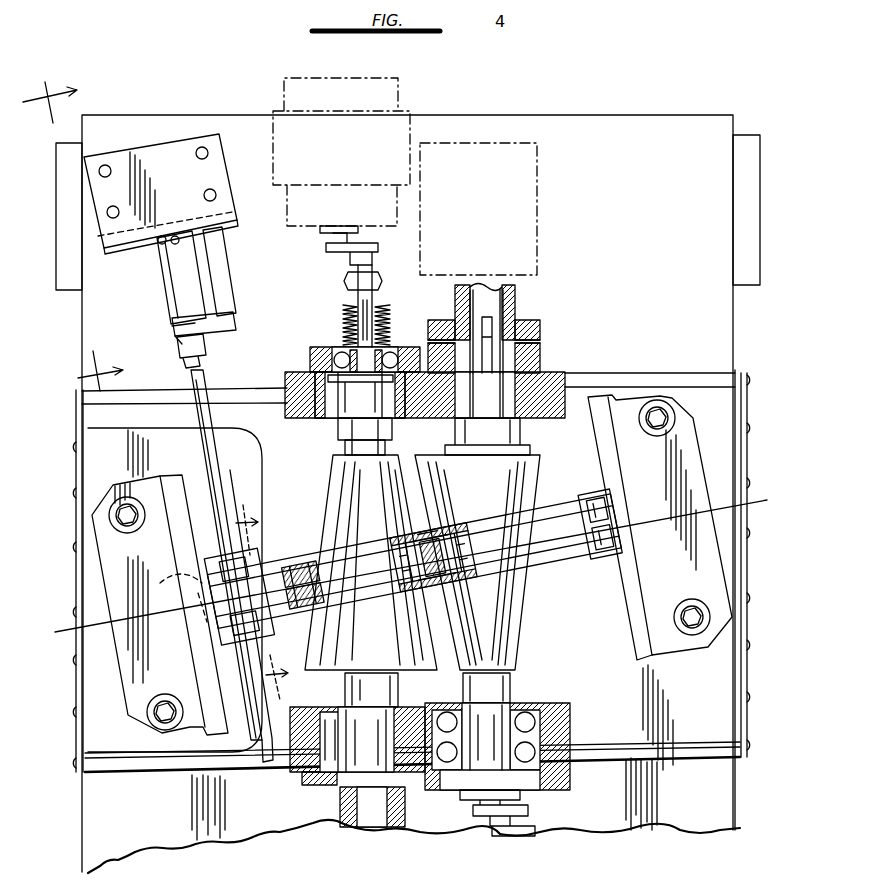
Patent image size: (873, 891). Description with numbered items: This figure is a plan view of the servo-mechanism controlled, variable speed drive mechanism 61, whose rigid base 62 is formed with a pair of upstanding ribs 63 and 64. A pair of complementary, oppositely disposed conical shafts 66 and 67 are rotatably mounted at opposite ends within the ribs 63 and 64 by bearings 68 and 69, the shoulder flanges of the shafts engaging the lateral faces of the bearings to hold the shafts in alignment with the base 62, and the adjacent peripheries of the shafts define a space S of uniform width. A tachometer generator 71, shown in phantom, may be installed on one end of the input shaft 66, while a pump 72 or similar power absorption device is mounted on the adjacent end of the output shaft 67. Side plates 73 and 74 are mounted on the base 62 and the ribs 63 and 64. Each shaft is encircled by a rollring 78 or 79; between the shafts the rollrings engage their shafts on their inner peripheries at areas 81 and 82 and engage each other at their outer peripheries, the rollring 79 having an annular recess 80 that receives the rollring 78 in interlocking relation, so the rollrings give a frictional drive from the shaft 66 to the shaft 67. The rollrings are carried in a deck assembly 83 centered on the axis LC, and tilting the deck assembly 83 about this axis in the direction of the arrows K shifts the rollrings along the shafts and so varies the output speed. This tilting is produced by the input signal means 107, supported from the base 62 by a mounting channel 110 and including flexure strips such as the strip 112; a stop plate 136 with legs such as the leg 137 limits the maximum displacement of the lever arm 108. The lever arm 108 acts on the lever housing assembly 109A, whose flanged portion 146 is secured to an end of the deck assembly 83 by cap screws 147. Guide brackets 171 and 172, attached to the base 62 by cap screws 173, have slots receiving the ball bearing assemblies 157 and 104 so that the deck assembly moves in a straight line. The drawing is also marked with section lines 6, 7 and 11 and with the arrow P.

The servo-mechanism controlled variable speed drive mechanism 61 is at (673, 68).
The rigid base 62 is at (719, 121).
The upstanding rib 63 is at (568, 378).
The upstanding rib 64 is at (568, 777).
The conical shaft 66 is at (347, 452).
The conical shaft 67 is at (433, 458).
The bearing 68 is at (347, 425).
The bearing 69 is at (525, 710).
The tachometer generator 71 is at (298, 80).
The pump 72 is at (540, 166).
The side plate 73 is at (83, 430).
The side plate 74 is at (743, 460).
The rollring 78 is at (412, 588).
The rollring 79 is at (436, 540).
The annular recess 80 is at (450, 568).
The engagement area 81 is at (412, 577).
The engagement area 82 is at (445, 556).
The deck assembly member 83 is at (492, 513).
The ball bearing 104 is at (622, 545).
The means for applying an input signal 107 is at (146, 314).
The lever arm 108 is at (207, 455).
The lever housing assembly 109A is at (216, 633).
The mounting channel 110 is at (188, 158).
The flexure strip 112 is at (163, 275).
The stop plate 136 is at (229, 284).
The leg 137 is at (222, 326).
The flanged portion 146 is at (239, 596).
The cap screws 147 is at (283, 656).
The ball bearing assembly 157 is at (177, 598).
The bracket 171 is at (210, 670).
The bracket 172 is at (633, 639).
The cap screws 173 is at (135, 536).
The direction of motion 11 is at (228, 655).
The section line 6- 6 is at (73, 236).
The section line 7- 7 is at (259, 602).
The axis LC is at (66, 644).
The arrows K is at (57, 637).
The force direction P is at (594, 482).
The space of uniform width S is at (417, 485).